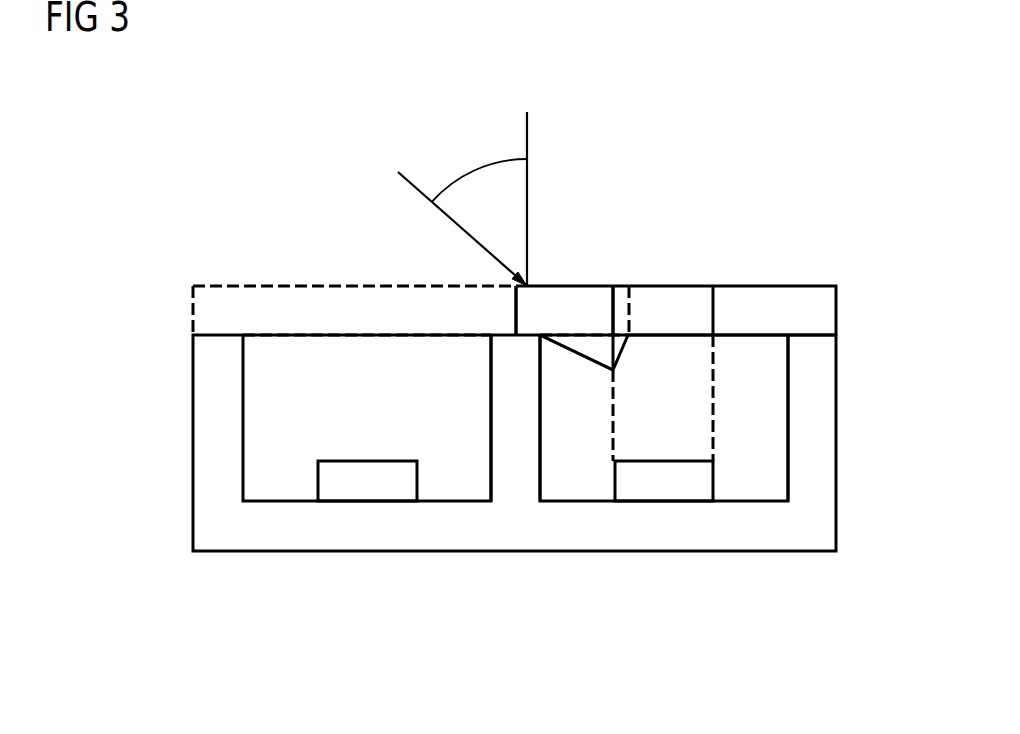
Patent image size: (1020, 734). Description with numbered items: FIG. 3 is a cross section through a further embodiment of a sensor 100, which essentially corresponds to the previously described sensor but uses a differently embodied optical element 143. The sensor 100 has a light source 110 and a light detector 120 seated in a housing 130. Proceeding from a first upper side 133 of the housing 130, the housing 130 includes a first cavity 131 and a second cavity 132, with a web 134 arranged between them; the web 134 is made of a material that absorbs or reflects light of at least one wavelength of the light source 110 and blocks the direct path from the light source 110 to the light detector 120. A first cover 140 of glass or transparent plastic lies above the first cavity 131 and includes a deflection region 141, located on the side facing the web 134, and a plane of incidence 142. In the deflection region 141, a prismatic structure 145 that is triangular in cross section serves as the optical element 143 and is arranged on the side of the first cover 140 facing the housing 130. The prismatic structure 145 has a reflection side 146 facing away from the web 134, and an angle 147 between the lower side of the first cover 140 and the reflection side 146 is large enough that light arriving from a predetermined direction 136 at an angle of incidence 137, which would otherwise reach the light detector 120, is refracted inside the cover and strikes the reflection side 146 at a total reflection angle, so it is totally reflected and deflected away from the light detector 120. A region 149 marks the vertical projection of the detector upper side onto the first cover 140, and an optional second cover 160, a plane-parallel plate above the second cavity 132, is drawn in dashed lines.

The sensor 100 is at (197, 207).
The light source 110 is at (365, 485).
The light detector 120 is at (662, 485).
The housing 130 is at (823, 528).
The first cavity 131 is at (748, 485).
The second cavity 132 is at (278, 485).
The first upper side 133 is at (770, 498).
The web 134 is at (515, 485).
The predetermined direction 136 is at (413, 185).
The angle of incidence 137 is at (520, 217).
The first cover 140 is at (825, 310).
The deflection region 141 is at (563, 300).
The plane of incidence 142 is at (648, 285).
The optical element 143 is at (575, 345).
The prismatic structure 145 is at (576, 391).
The reflection side 146 is at (625, 342).
The angle 147 is at (612, 343).
The region 149 is at (697, 303).
The second cover 160 is at (207, 312).